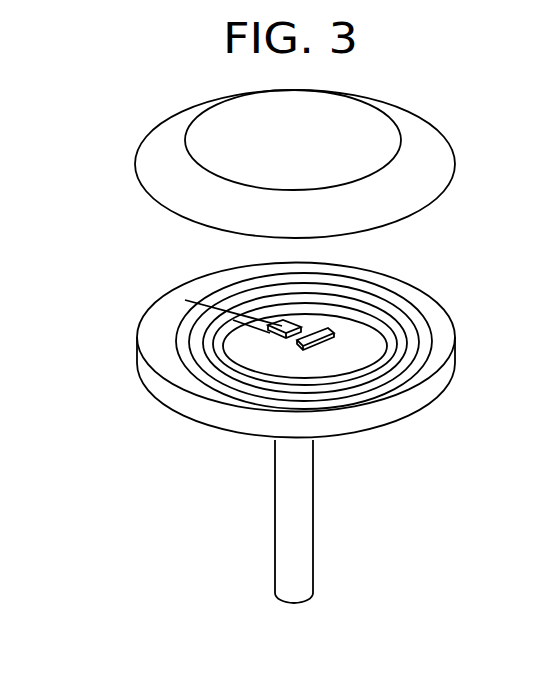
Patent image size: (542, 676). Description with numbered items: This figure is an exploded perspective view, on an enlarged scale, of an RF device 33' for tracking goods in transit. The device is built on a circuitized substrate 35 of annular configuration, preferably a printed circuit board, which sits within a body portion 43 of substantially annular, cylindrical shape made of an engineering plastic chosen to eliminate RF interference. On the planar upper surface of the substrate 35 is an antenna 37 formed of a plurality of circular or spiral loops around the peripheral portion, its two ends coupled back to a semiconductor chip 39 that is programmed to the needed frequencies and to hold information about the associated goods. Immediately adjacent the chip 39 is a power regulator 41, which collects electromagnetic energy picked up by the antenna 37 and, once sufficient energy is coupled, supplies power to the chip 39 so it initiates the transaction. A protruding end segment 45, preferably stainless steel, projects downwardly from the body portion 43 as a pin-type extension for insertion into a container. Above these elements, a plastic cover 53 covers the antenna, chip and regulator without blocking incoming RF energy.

The RF device 33' is at (63, 150).
The cover 53 is at (160, 114).
The circuitized substrate 35 is at (438, 325).
The antenna 37 is at (177, 341).
The semiconductor chip 39 is at (278, 322).
The power regulator 41 is at (323, 330).
The body portion 43 is at (173, 412).
The protruding end segment 45 is at (273, 510).